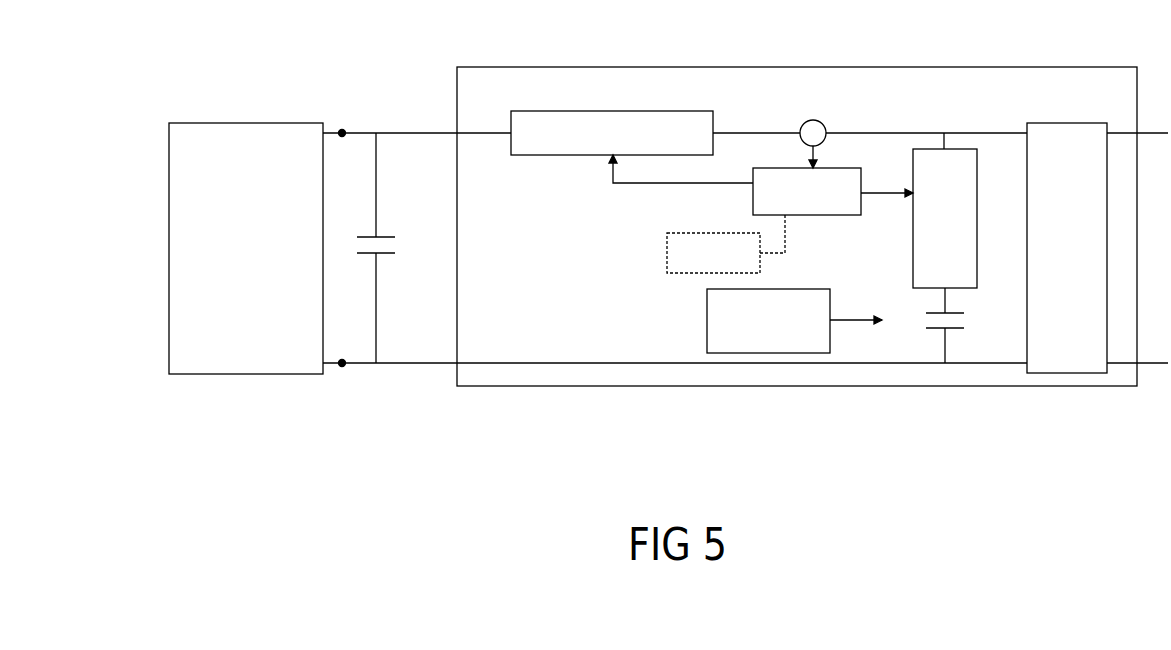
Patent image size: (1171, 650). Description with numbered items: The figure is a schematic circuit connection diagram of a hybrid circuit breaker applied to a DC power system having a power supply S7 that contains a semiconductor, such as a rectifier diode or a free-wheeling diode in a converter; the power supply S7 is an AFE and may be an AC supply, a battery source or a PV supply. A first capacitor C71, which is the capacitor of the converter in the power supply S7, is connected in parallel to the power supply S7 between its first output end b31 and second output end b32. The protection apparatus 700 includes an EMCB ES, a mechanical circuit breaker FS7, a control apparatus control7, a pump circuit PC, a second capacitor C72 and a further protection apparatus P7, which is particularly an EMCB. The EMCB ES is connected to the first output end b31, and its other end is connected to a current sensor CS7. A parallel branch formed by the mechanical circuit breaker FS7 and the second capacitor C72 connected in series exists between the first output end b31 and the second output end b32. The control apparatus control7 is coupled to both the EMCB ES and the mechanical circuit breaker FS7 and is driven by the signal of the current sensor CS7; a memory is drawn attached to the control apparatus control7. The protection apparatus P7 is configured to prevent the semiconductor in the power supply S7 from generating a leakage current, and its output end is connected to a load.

The protection apparatus 700 is at (985, 67).
The power supply S7 is at (263, 269).
The first output end b31 is at (344, 130).
The second output end b32 is at (344, 366).
The first capacitor C71 is at (388, 232).
The second capacitor C72 is at (930, 311).
The EMCB ES is at (629, 148).
The current sensor CS7 is at (812, 118).
The control apparatus control7 is at (807, 191).
The element memory is at (726, 244).
The pump circuit PC is at (781, 332).
The mechanical circuit breaker FS7 is at (965, 245).
The protection apparatus P7 is at (1082, 258).